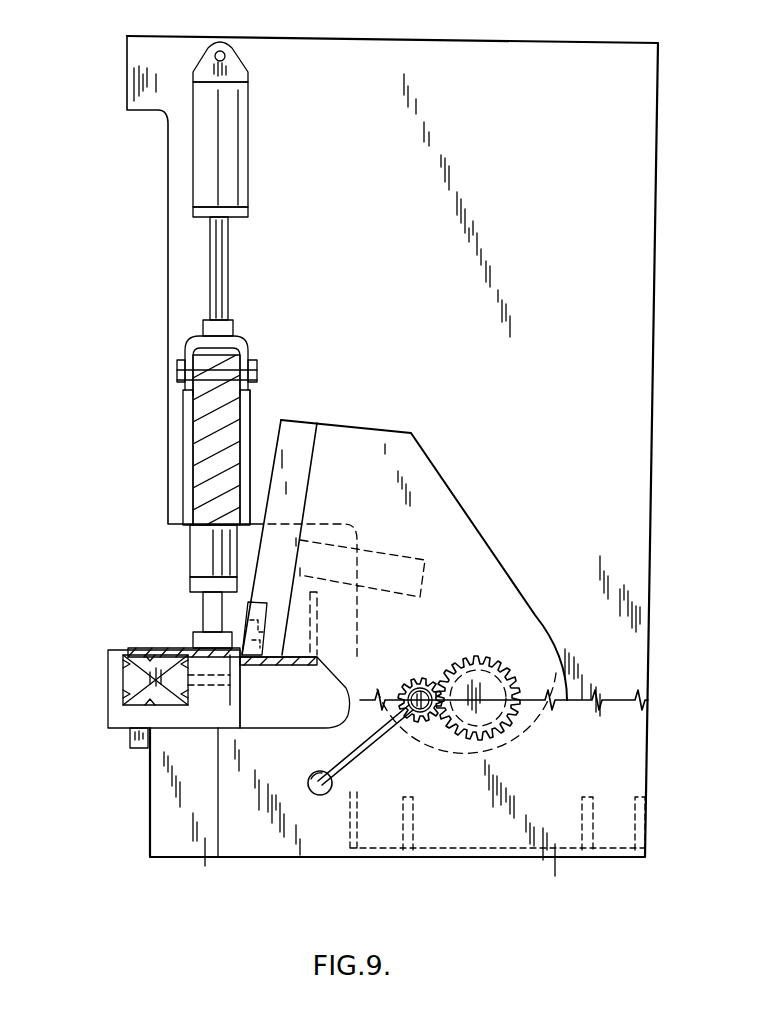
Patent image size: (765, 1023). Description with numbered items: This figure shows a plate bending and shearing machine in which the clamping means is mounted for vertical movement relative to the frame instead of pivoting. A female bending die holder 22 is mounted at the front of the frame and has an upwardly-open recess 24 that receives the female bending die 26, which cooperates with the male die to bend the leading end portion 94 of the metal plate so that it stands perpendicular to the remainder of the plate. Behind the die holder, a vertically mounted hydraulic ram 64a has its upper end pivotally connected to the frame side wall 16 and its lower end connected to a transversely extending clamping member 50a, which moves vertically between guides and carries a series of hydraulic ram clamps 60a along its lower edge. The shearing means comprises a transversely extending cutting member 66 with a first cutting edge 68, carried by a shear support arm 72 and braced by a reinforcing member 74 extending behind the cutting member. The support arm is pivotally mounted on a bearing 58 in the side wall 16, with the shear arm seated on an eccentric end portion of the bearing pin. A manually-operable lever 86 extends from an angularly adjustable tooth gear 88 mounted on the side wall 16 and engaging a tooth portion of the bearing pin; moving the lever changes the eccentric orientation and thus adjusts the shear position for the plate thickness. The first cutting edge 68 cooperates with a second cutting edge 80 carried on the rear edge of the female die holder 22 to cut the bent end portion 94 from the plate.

The frame side wall 16 is at (500, 847).
The female bending die holder 22 is at (108, 712).
The recess 24 is at (155, 702).
The female bending die 26 is at (125, 680).
The clamping member 50a is at (205, 420).
The bearing 58 is at (495, 718).
The hydraulic ram clamps 60a is at (190, 558).
The hydraulic ram 64a is at (205, 148).
The cutting member 66 is at (300, 428).
The first cutting edge 68 is at (258, 656).
The shear support arm 72 is at (440, 500).
The reinforcing member 74 is at (390, 567).
The second cutting edge 80 is at (242, 664).
The manually-operable lever 86 is at (348, 750).
The tooth gear 88 is at (428, 680).
The leading end portion 94 is at (295, 692).